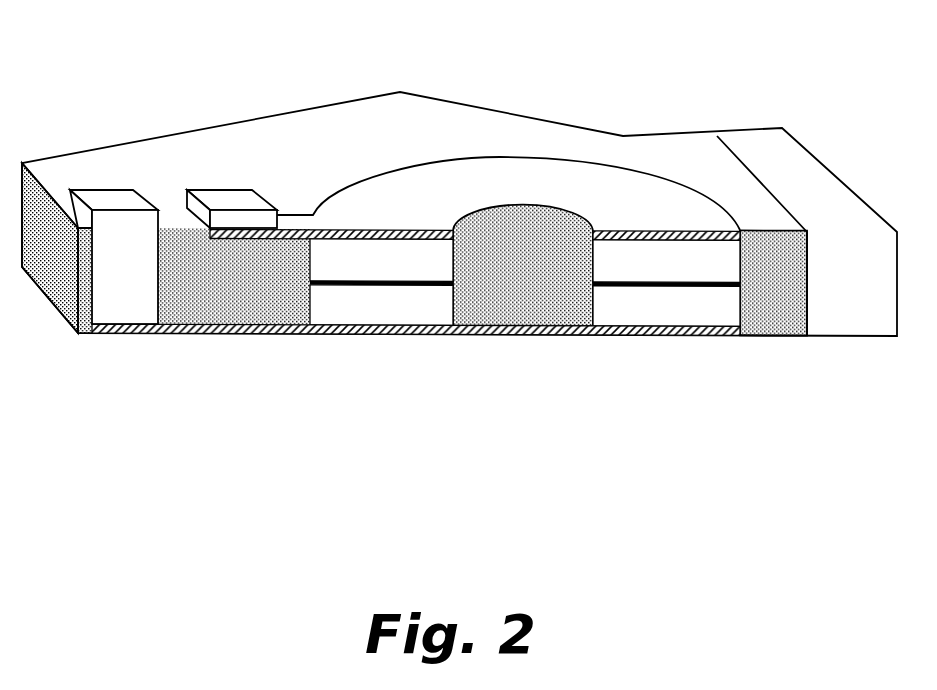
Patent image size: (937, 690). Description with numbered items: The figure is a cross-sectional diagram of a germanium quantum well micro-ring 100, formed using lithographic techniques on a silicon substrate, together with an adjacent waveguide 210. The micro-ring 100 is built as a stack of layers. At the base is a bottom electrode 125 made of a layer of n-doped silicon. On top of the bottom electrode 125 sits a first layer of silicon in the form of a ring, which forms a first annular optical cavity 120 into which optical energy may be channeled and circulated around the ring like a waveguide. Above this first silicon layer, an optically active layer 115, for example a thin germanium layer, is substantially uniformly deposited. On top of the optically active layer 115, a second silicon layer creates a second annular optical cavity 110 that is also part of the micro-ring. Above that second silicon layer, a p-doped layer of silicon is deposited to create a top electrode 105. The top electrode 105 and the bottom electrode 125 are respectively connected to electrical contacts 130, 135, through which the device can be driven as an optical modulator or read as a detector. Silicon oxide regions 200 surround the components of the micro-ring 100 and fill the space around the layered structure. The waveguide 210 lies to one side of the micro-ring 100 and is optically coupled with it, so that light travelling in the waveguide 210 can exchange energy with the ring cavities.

The quantum well micro-ring 100 is at (250, 64).
The top electrode 105 is at (580, 170).
The second annular optical cavity 110 is at (350, 257).
The optically active layer 115 is at (357, 284).
The first annular optical cavity 120 is at (402, 306).
The bottom electrode 125 is at (437, 329).
The electrical contact 130 is at (208, 198).
The electrical contact 135 is at (107, 198).
The silicon oxide regions 200 is at (407, 125).
The waveguide 210 is at (765, 157).